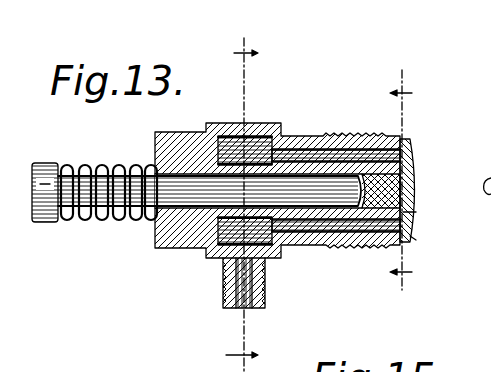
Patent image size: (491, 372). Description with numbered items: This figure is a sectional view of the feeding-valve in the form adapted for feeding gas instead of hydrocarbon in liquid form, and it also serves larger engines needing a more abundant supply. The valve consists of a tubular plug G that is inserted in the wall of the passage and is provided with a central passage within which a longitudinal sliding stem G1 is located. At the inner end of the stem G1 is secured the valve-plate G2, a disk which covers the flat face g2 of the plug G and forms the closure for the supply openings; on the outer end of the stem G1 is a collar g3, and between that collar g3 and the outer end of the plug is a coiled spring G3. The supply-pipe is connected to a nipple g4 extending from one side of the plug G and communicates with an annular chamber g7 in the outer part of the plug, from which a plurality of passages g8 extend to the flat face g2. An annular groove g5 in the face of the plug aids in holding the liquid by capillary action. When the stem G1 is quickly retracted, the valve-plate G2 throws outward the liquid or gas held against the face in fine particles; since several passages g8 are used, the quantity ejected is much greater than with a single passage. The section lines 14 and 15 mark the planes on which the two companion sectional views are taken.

The plug G is at (303, 135).
The stem G1 is at (173, 190).
The valve-plate G2 is at (413, 160).
The coiled spring G3 is at (98, 150).
The flat face g2 is at (416, 212).
The collar g3 is at (50, 138).
The nipple g4 is at (226, 292).
The annular groove g5 is at (416, 240).
The annular chamber g7 is at (258, 134).
The passages g8 is at (337, 254).
The section line 15 15 is at (242, 195).
The section line 14 14 is at (403, 184).